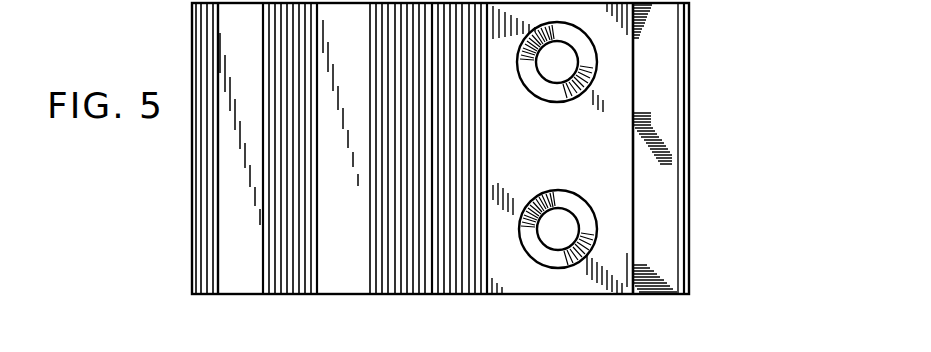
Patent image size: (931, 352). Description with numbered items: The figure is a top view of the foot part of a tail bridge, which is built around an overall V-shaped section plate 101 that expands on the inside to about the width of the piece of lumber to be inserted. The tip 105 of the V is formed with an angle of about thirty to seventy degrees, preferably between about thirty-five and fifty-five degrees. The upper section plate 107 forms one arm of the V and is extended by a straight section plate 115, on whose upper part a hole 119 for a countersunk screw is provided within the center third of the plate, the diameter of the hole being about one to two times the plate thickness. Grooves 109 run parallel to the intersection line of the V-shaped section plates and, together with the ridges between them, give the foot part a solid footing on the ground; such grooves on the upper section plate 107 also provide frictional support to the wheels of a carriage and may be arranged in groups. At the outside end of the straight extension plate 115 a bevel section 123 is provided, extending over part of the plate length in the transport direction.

The V-shaped section plate 101 is at (178, 170).
The tip 105 is at (198, 227).
The upper section plate 107 is at (340, 253).
The grooves 109 is at (277, 282).
The straight section plate 115 is at (590, 160).
The hole 119 is at (550, 200).
The bevel section 123 is at (672, 170).